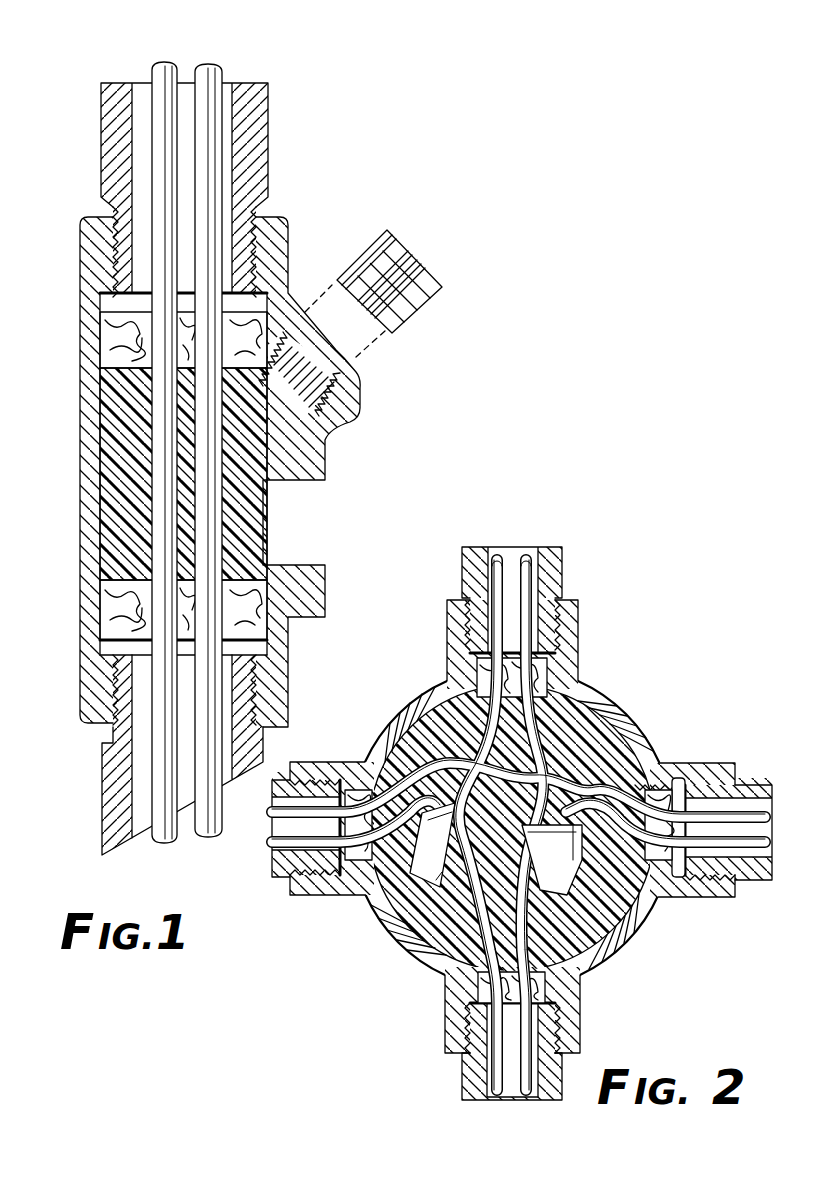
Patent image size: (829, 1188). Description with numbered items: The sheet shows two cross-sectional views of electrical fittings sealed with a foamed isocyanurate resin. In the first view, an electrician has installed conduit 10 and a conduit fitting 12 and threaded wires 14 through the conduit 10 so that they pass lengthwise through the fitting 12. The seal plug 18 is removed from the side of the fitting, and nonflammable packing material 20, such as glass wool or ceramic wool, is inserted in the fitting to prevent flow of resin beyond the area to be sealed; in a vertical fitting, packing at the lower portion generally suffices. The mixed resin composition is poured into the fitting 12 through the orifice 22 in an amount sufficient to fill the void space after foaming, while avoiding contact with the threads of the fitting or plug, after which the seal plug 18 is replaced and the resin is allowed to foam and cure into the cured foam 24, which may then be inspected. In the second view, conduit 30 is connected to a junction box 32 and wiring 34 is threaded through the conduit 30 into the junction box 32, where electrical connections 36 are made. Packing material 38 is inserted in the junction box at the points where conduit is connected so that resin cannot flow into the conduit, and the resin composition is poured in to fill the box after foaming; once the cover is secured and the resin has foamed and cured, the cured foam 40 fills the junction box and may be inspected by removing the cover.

In FIG. 1, the conduit 10 is at (268, 114).
In FIG. 1, the conduit fitting 12 is at (88, 217).
In FIG. 1, the wires 14 is at (205, 72).
In FIG. 1, the seal plug 18 is at (425, 265).
In FIG. 1, the packing material 20 is at (288, 292).
In FIG. 1, the orifice 22 is at (358, 358).
In FIG. 1, the cured foam 24 is at (122, 397).
In FIG. 2, the conduit 30 is at (562, 556).
In FIG. 2, the junction box 32 is at (628, 722).
In FIG. 2, the wiring 34 is at (527, 560).
In FIG. 2, the electrical connections 36 is at (426, 880).
In FIG. 2, the packing material 38 is at (548, 680).
In FIG. 2, the cured foam 40 is at (612, 962).